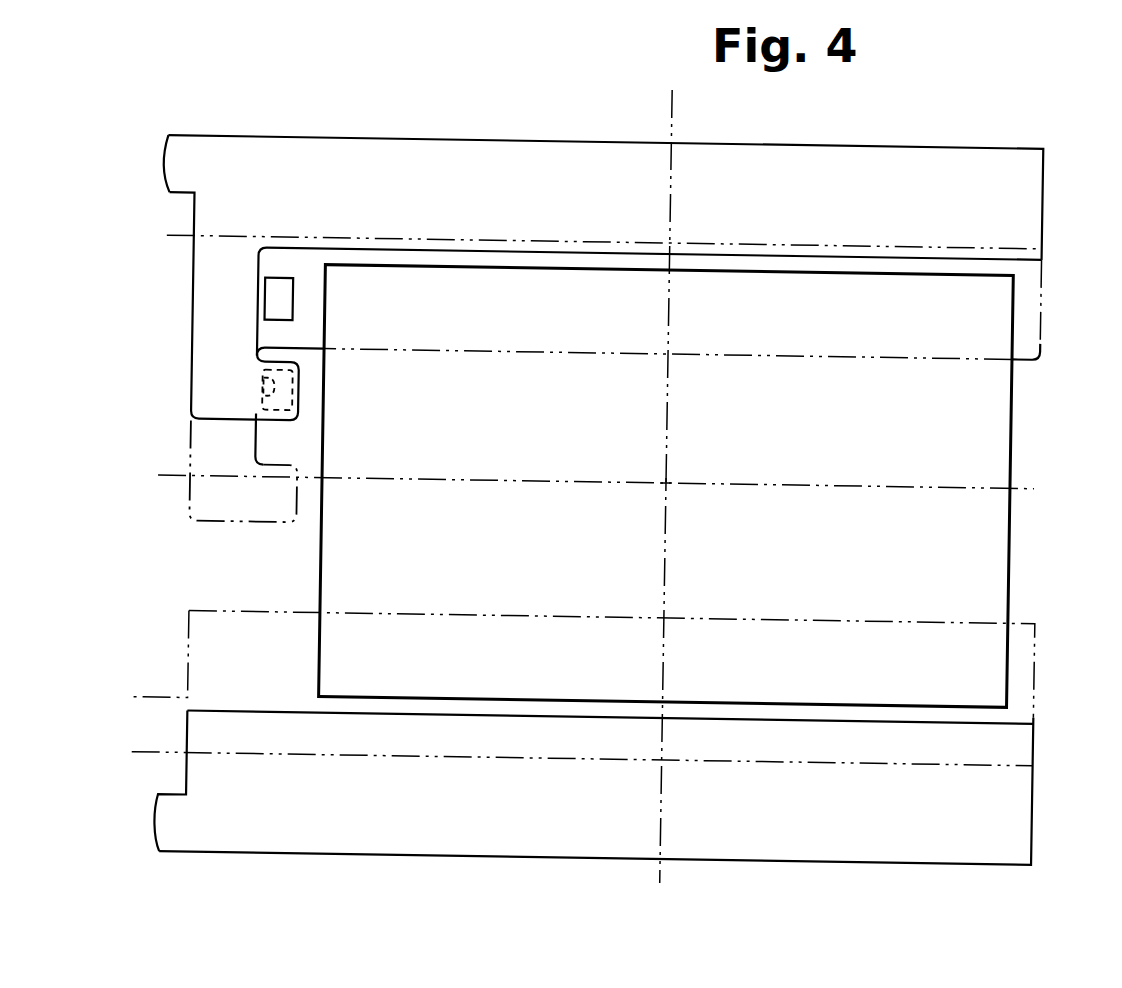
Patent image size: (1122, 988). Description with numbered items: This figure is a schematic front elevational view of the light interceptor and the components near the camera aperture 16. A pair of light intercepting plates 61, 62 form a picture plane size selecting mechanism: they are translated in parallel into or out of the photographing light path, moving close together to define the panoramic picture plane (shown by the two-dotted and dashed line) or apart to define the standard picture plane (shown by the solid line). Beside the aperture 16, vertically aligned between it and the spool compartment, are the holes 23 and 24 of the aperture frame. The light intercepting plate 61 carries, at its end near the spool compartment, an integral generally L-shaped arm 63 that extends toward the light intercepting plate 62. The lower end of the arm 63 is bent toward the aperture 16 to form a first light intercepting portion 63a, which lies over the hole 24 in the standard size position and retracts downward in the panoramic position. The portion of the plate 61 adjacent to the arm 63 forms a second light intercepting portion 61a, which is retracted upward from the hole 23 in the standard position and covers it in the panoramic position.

The aperture 16 is at (980, 554).
The hole 23 is at (268, 293).
The hole 24 is at (262, 378).
The light intercepting plate 61 is at (529, 166).
The second light intercepting portion 61a is at (281, 216).
The light intercepting plate 62 is at (885, 838).
The arm 63 is at (213, 348).
The first light intercepting portion 63a is at (277, 420).